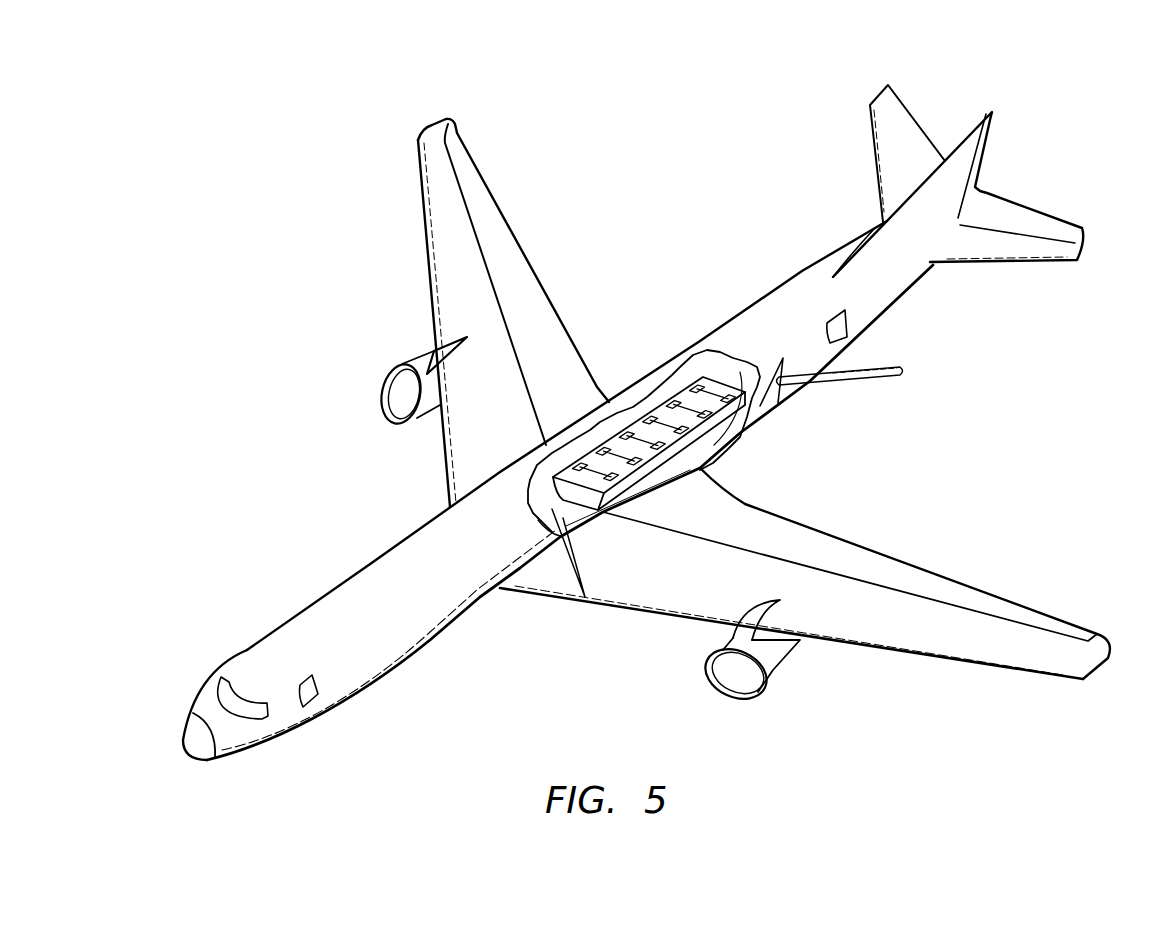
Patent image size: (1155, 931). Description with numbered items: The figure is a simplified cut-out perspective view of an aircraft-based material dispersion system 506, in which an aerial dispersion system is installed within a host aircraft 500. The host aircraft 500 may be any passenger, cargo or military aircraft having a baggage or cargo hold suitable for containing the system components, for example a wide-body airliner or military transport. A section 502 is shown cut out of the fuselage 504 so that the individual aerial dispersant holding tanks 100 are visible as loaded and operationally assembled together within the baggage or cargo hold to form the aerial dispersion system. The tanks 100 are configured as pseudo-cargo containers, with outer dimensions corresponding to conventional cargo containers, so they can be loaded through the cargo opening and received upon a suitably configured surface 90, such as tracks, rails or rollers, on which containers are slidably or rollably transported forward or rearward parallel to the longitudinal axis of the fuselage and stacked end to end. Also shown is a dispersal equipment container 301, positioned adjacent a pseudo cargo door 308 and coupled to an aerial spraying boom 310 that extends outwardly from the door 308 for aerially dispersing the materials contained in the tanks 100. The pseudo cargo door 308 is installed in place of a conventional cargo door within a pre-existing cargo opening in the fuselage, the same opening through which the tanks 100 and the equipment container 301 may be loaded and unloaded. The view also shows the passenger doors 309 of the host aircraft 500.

The aircraft-based material dispersion system 506 is at (699, 91).
The host aircraft 500 is at (243, 651).
The fuselage 504 is at (803, 273).
The section 502 is at (528, 500).
The dispersal equipment container 301 is at (707, 376).
The aerial dispersant holding tanks 100 is at (697, 389).
The surface 90 is at (585, 597).
The passenger doors 309 is at (316, 692).
The pseudo cargo door 308 is at (812, 366).
The aerial spraying boom 310 is at (868, 380).